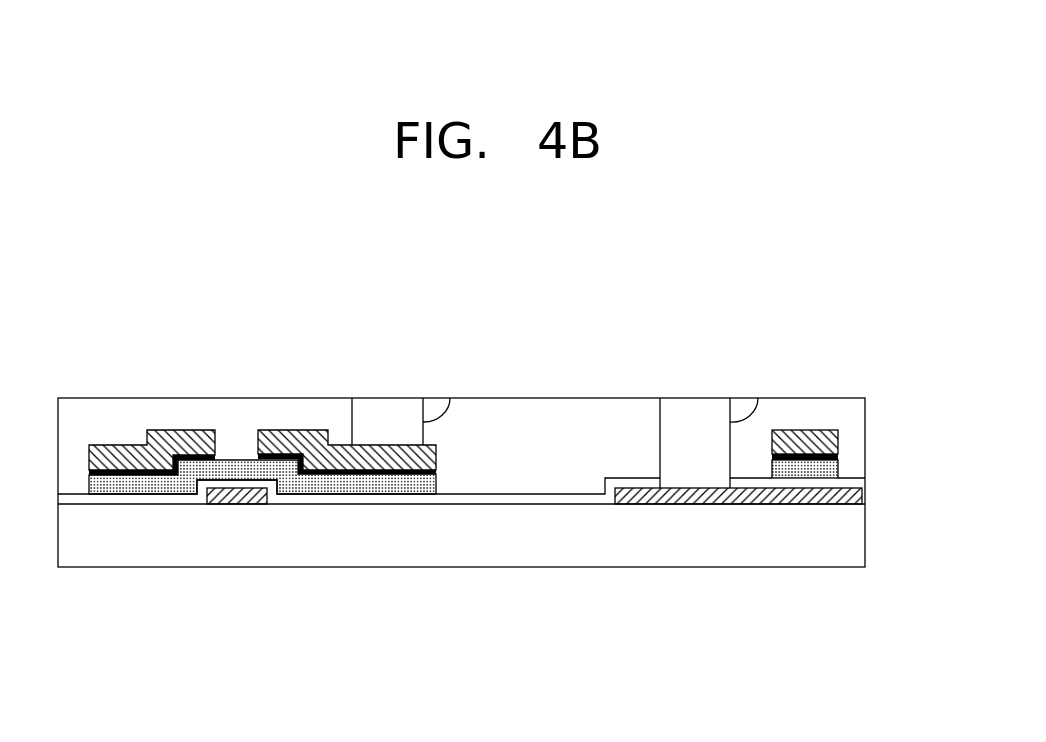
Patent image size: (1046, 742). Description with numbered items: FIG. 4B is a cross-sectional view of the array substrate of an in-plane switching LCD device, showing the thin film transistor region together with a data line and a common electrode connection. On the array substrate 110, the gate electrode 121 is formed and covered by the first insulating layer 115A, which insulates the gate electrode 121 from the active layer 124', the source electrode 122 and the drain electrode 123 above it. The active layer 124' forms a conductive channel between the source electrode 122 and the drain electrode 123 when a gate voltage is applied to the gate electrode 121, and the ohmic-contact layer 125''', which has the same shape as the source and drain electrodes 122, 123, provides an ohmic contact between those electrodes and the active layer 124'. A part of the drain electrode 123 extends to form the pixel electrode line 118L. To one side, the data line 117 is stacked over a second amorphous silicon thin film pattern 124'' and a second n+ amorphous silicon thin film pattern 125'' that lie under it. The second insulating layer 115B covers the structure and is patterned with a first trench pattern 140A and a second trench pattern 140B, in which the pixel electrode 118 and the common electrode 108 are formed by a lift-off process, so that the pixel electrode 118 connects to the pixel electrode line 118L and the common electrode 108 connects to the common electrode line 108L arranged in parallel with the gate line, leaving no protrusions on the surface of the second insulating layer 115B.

The array substrate 110 is at (858, 537).
The pixel electrode line 118L is at (413, 494).
The gate electrode 121 is at (235, 504).
The common electrode line 108L is at (862, 495).
The active layer 124' is at (262, 541).
The ohmic-contact layer 125''' is at (262, 538).
The source electrode 122 is at (193, 445).
The drain electrode 123 is at (282, 430).
The pixel electrode 118 is at (374, 398).
The first trench pattern 140A is at (450, 398).
The common electrode 108 is at (699, 400).
The second trench pattern 140B is at (757, 398).
The data line 117 is at (805, 430).
The second n+ amorphous silicon thin film pattern 125'' is at (858, 456).
The second amorphous silicon thin film pattern 124'' is at (858, 476).
The second insulating layer 115B is at (858, 409).
The first insulating layer 115A is at (782, 483).